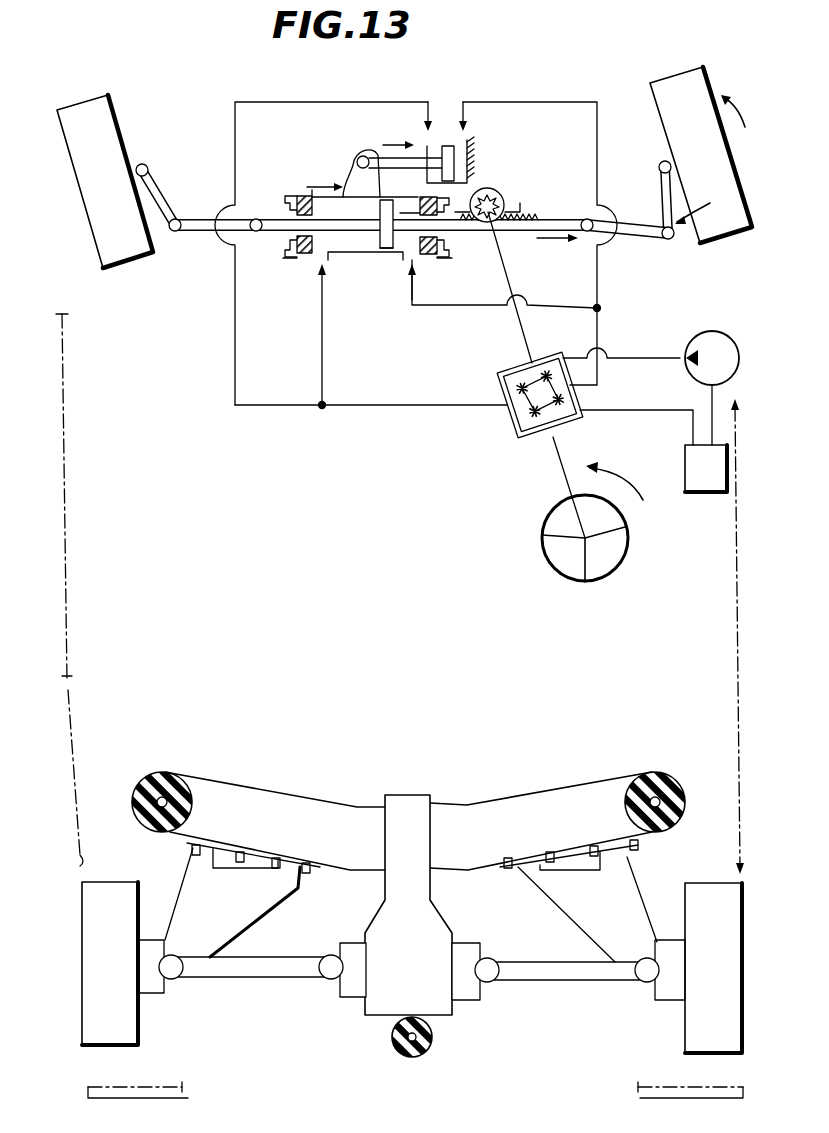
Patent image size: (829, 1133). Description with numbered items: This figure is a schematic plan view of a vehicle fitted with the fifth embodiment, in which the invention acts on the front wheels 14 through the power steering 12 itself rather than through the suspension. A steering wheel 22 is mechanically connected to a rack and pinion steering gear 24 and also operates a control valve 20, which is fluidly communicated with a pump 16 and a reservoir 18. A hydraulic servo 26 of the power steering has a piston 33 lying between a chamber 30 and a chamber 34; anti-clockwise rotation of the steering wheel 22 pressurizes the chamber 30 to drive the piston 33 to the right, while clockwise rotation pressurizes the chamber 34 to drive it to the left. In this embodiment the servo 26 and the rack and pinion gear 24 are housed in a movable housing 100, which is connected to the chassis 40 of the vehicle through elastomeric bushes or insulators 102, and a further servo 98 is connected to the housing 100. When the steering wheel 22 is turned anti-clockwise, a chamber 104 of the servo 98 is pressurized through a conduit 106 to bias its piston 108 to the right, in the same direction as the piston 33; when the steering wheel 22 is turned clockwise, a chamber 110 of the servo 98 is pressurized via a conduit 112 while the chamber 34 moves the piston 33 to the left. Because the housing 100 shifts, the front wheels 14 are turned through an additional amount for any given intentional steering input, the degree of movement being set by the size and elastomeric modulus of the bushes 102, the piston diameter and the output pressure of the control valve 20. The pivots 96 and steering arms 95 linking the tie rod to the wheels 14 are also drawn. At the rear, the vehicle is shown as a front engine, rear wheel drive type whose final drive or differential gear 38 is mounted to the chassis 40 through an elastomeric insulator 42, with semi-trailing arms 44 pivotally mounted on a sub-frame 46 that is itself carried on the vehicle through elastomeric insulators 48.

The power steering 12 is at (368, 262).
The front wheels 14 is at (137, 253).
The pump 16 is at (693, 376).
The reservoir 18 is at (707, 493).
The control valve 20 is at (515, 437).
The steering wheel 22 is at (566, 583).
The rack and pinion steering gear 24 is at (512, 202).
The hydraulic servo 26 is at (347, 258).
The chamber 30 is at (352, 208).
The piston 33 is at (388, 260).
The chamber 34 is at (398, 204).
The final drive or differential gear 38 is at (372, 1005).
The vehicle chassis 40 is at (292, 255).
The elastomeric insulator 42 is at (432, 1040).
The trailing arms 44 is at (267, 900).
The sub-frame 46 is at (232, 800).
The elastomeric insulators 48 is at (158, 775).
The steering arm 95 is at (158, 198).
The pivot 96 is at (147, 165).
The servo 98 is at (442, 146).
The movable housing 100 is at (362, 178).
The elastomeric bushes 102 is at (302, 260).
The chamber 104 is at (428, 146).
The conduit 106 is at (320, 368).
The piston 108 is at (450, 178).
The chamber 110 is at (462, 158).
The conduit 112 is at (565, 306).